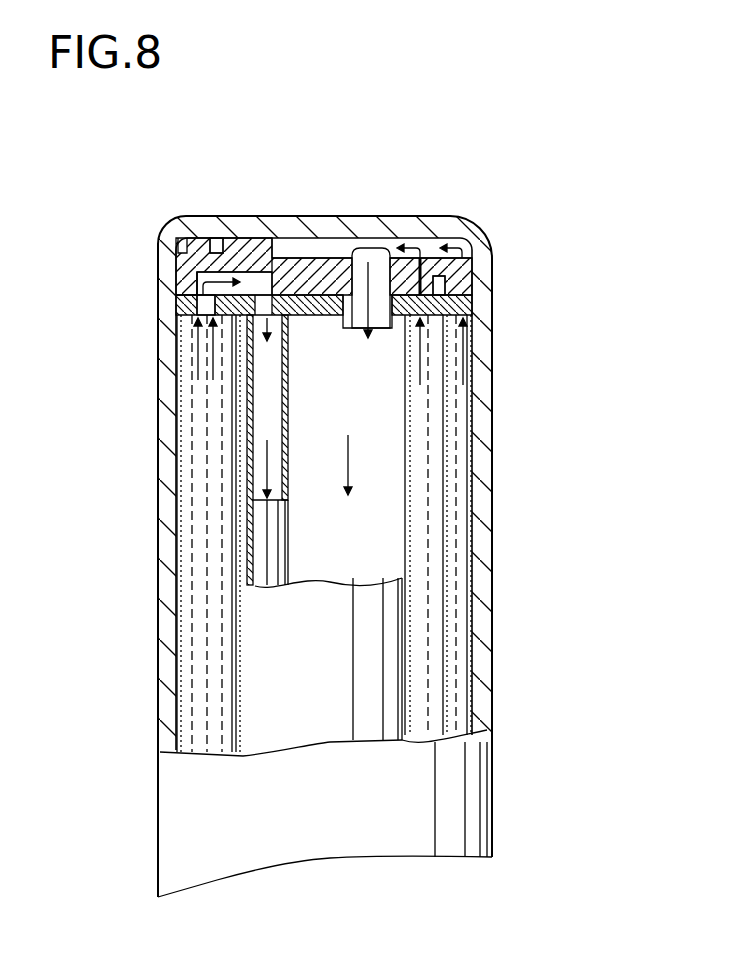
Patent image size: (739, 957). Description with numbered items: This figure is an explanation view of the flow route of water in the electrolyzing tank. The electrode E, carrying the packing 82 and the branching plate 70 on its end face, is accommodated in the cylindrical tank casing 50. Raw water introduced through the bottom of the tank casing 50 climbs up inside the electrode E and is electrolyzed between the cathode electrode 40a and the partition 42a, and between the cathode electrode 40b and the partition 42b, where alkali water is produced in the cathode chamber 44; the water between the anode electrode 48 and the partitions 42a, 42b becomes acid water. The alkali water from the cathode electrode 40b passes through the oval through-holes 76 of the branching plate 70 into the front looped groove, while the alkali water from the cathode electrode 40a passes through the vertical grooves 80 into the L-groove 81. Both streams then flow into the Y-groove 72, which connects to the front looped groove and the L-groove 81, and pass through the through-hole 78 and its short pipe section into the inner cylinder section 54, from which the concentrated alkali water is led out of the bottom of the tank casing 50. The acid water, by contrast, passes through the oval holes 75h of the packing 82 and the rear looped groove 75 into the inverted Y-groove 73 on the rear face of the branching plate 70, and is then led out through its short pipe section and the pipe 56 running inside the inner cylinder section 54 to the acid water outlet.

The cathode electrode 40a is at (470, 525).
The cathode electrode 40b is at (415, 686).
The partition 42a is at (131, 697).
The partition 42b is at (125, 777).
The cathode chamber 44 is at (258, 169).
The anode electrode 48 is at (445, 445).
The tank casing 50 is at (100, 447).
The inner cylinder section 54 is at (380, 640).
The pipe 56 is at (114, 546).
The branching plate 70 is at (300, 168).
The Y-groove 72 is at (350, 182).
The inverted Y-groove 73 is at (112, 232).
The rear looped groove 75 is at (505, 210).
The oval holes 75h is at (96, 318).
The oval through-holes 76 is at (465, 173).
The through-hole 78 is at (412, 163).
The vertical grooves 80 is at (470, 266).
The L-groove 81 is at (159, 179).
The packing 82 is at (468, 312).